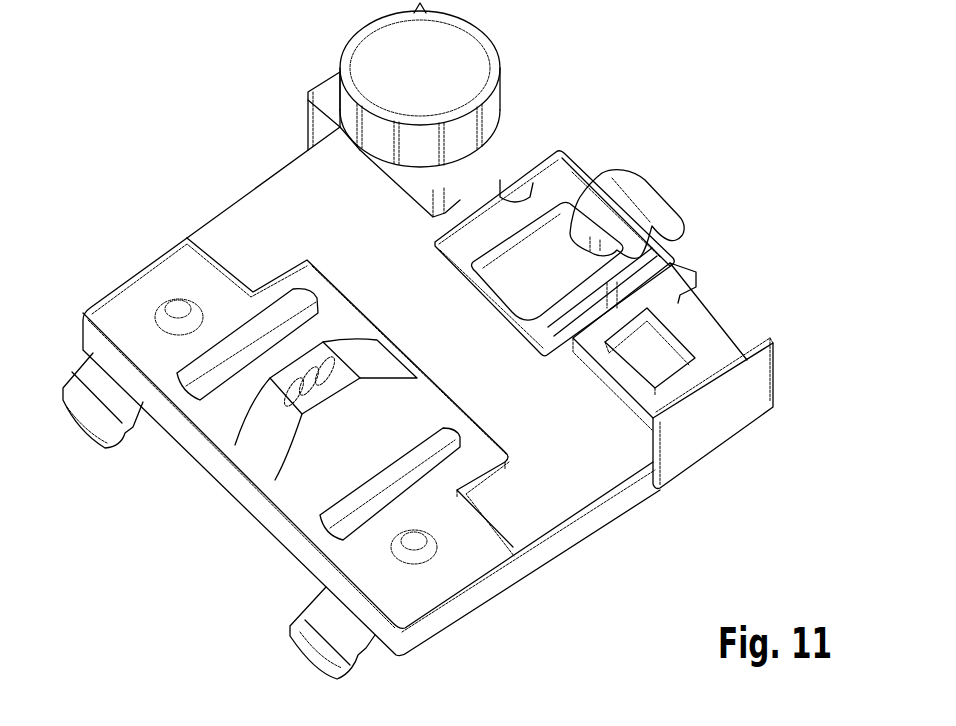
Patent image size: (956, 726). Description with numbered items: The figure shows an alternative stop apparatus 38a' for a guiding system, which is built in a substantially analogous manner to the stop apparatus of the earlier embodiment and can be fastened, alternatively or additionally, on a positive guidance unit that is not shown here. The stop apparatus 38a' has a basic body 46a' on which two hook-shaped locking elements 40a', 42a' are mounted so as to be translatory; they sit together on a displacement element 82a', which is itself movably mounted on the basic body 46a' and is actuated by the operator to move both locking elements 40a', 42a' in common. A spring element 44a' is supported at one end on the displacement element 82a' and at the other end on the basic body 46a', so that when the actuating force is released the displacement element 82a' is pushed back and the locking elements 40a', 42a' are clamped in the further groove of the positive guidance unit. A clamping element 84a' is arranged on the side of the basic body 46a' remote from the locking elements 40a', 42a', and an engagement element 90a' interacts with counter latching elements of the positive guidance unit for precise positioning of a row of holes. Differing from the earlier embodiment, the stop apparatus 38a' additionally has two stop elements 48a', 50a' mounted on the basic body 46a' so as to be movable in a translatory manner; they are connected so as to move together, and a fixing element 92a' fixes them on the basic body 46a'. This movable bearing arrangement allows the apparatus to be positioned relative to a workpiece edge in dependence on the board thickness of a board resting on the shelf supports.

The stop apparatus 38a' is at (434, 341).
The locking element 40a' is at (95, 432).
The locking element 42a' is at (283, 633).
The spring element 44a' is at (281, 451).
The basic body 46a' is at (397, 391).
The stop element 48a' is at (280, 111).
The stop element 50a' is at (697, 381).
The displacement element 82a' is at (488, 589).
The clamping element 84a' is at (670, 214).
The engagement element 90a' is at (554, 230).
The fixing element 92a' is at (467, 110).